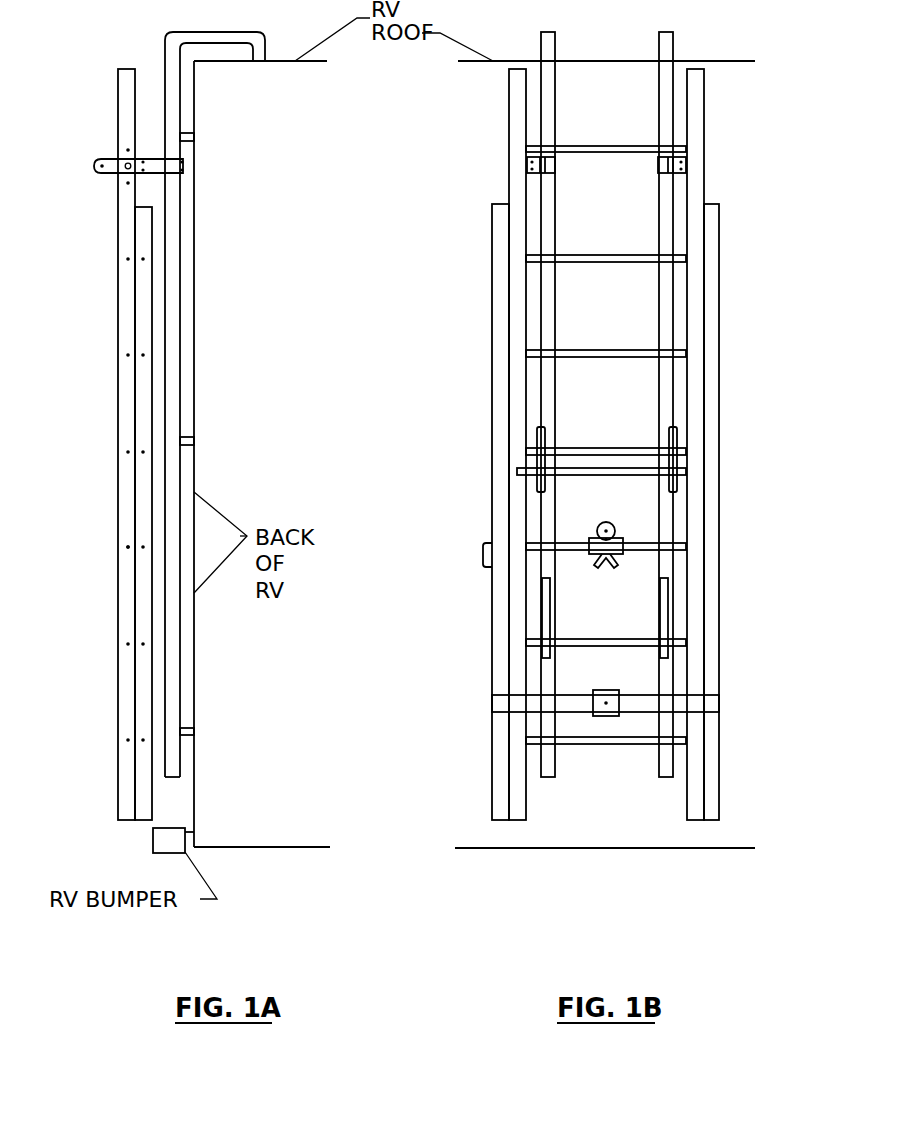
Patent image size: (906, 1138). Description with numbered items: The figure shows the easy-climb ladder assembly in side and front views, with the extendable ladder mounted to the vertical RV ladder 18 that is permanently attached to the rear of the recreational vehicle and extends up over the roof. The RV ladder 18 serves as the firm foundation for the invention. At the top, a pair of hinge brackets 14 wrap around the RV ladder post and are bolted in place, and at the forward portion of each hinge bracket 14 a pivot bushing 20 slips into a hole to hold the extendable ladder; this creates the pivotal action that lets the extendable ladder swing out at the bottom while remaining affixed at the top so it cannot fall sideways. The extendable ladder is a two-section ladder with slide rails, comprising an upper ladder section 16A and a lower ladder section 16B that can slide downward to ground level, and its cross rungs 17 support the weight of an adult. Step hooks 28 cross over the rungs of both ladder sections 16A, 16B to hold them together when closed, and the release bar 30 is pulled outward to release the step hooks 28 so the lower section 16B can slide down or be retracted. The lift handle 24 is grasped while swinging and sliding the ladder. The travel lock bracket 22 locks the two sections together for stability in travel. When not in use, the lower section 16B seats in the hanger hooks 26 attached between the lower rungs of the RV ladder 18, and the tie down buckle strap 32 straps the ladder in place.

In FIG. 1A, the hinge bracket 14 is at (111, 131).
In FIG. 1B, the hinge bracket 14 is at (528, 165).
In FIG. 1A, the upper extendable ladder section 16A is at (130, 273).
In FIG. 1B, the upper extendable ladder section 16A is at (520, 269).
In FIG. 1A, the lower extendable ladder section 16B is at (143, 395).
In FIG. 1B, the lower extendable ladder section 16B is at (505, 323).
In FIG. 1A, the rung 17 is at (89, 575).
In FIG. 1B, the rung 17 is at (650, 253).
In FIG. 1A, the RV ladder 18 is at (183, 326).
In FIG. 1B, the RV ladder 18 is at (675, 117).
In FIG. 1B, the pivot bushing 20 is at (527, 163).
In FIG. 1B, the travel lock bracket 22 is at (687, 511).
In FIG. 1B, the lift handle 24 is at (483, 553).
In FIG. 1B, the hanger hook 26 is at (547, 642).
In FIG. 1B, the step hook 28 is at (677, 437).
In FIG. 1B, the release bar 30 is at (517, 471).
In FIG. 1B, the tie down buckle strap 32 is at (492, 700).